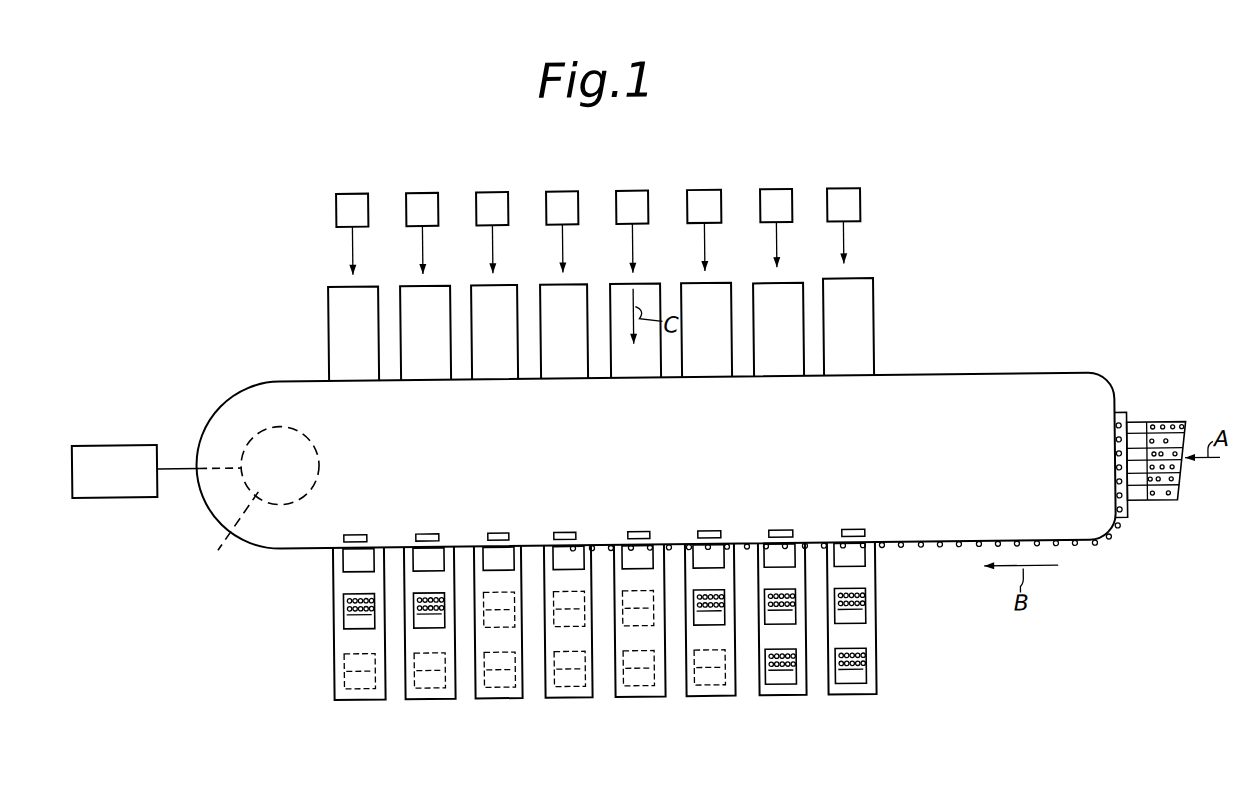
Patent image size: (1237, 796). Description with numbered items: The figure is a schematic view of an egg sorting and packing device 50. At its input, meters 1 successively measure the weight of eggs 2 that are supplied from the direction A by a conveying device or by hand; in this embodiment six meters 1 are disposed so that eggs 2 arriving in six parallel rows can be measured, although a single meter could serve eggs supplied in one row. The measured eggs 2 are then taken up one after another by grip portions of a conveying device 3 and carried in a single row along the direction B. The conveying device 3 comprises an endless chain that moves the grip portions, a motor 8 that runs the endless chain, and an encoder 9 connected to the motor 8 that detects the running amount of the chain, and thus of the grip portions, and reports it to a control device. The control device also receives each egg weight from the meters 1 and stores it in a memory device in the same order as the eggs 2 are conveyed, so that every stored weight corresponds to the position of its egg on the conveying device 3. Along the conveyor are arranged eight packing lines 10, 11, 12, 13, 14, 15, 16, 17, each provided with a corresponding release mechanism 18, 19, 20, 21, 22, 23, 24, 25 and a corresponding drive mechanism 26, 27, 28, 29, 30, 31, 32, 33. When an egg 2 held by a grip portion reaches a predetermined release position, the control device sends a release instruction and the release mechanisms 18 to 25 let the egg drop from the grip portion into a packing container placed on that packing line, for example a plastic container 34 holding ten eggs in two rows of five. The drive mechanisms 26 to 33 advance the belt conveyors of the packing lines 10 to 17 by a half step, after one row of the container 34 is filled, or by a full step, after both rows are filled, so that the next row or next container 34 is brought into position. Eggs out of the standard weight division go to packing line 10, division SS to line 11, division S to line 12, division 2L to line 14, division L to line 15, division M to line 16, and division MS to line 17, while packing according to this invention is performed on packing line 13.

The meter 1 is at (1136, 424).
The egg 2 is at (1168, 500).
The conveying device 3 is at (942, 378).
The motor 8 is at (261, 503).
The encoder 9 is at (116, 439).
The packing line 10 is at (857, 696).
The packing line 11 is at (782, 696).
The packing line 12 is at (710, 696).
The packing line 13 is at (638, 696).
The packing line 14 is at (568, 696).
The packing line 15 is at (497, 696).
The packing line 16 is at (428, 696).
The packing line 17 is at (357, 696).
The release mechanism 18 is at (863, 531).
The release mechanism 19 is at (780, 531).
The release mechanism 20 is at (706, 531).
The release mechanism 21 is at (637, 531).
The release mechanism 22 is at (563, 531).
The release mechanism 23 is at (497, 531).
The release mechanism 24 is at (424, 531).
The release mechanism 25 is at (352, 531).
The drive mechanism 26 is at (853, 190).
The drive mechanism 27 is at (783, 190).
The drive mechanism 28 is at (712, 190).
The drive mechanism 29 is at (640, 190).
The drive mechanism 30 is at (572, 190).
The drive mechanism 31 is at (500, 190).
The drive mechanism 32 is at (430, 190).
The drive mechanism 33 is at (361, 190).
The container 34 is at (345, 557).
The egg sorting and packing device 50 is at (654, 342).